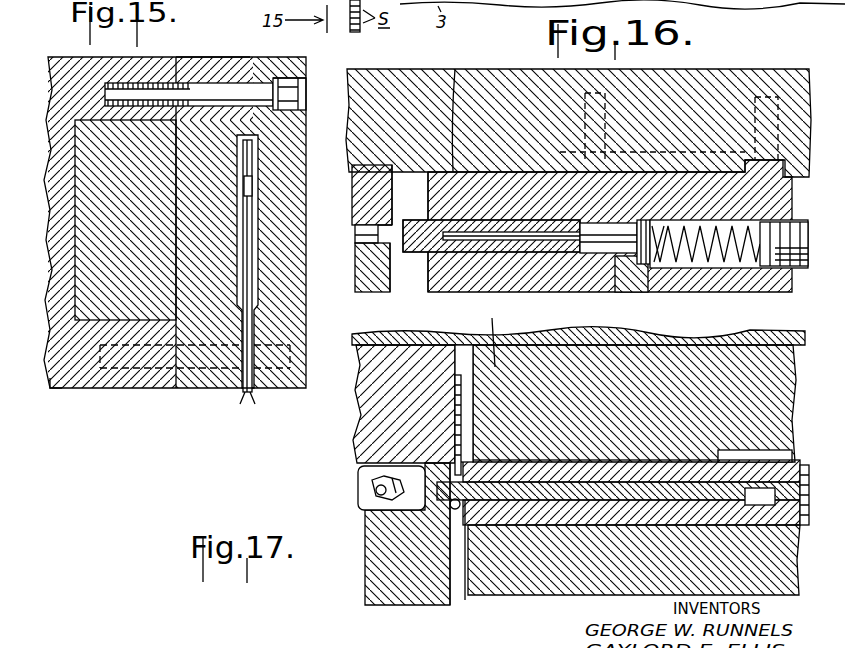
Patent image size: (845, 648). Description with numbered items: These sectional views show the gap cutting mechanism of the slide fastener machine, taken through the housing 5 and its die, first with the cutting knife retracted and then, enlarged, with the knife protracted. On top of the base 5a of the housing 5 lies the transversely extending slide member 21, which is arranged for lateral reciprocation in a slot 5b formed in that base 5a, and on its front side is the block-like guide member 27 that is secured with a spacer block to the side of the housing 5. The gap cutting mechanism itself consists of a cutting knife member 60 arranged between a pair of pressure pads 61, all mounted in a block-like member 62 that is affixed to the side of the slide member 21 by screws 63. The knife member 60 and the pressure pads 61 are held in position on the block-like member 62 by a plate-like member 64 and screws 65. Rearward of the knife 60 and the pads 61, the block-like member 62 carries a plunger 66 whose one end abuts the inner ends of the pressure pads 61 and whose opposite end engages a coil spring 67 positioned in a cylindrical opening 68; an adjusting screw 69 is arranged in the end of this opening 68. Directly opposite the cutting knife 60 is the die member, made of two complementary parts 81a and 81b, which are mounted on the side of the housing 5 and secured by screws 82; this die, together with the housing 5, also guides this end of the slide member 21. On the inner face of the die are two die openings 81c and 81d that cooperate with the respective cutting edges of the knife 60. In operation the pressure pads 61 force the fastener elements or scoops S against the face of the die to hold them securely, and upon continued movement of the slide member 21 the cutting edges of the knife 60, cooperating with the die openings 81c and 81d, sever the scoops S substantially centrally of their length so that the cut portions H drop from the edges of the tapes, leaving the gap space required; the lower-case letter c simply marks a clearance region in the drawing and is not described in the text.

In FIG. 15, the housing 5 is at (71, 62).
In FIG. 15, the base of the housing 5a is at (68, 389).
In FIG. 15, the slot 5b is at (75, 274).
In FIG. 15, the slide member 21 is at (85, 226).
In FIG. 16, the slide member 21 is at (727, 70).
In FIG. 17, the block-like guide member 27 is at (574, 331).
In FIG. 16, the cutting knife member 60 is at (432, 262).
In FIG. 17, the cutting knife member 60 is at (532, 462).
In FIG. 16, the pressure pads 61 is at (412, 220).
In FIG. 17, the pressure pads 61 is at (568, 462).
In FIG. 16, the block-like member 62 is at (457, 67).
In FIG. 17, the block-like member 62 is at (482, 334).
In FIG. 16, the screws 63 is at (560, 266).
In FIG. 16, the plate-like member 64 is at (440, 268).
In FIG. 17, the plate-like member 64 is at (629, 588).
In FIG. 16, the screws 65 is at (505, 266).
In FIG. 16, the plunger 66 is at (621, 250).
In FIG. 17, the plunger 66 is at (803, 465).
In FIG. 16, the coil spring 67 is at (661, 264).
In FIG. 16, the cylindrical opening 68 is at (698, 264).
In FIG. 16, the adjusting screw 69 is at (805, 268).
In FIG. 15, the die part 81a is at (205, 60).
In FIG. 16, the die part 81a is at (355, 204).
In FIG. 17, the die part 81a is at (372, 421).
In FIG. 15, the die part 81b is at (277, 76).
In FIG. 16, the die part 81b is at (360, 293).
In FIG. 17, the die part 81b is at (371, 601).
In FIG. 15, the die opening 81c is at (255, 249).
In FIG. 16, the die opening 81c is at (362, 262).
In FIG. 17, the die opening 81c is at (447, 497).
In FIG. 15, the die opening 81d is at (250, 184).
In FIG. 15, the screws 82 is at (230, 85).
In FIG. 17, the cut portions H is at (386, 497).
In FIG. 17, the fastener elements or scoops S is at (450, 507).
In FIG. 17, the clearance slot c is at (452, 600).